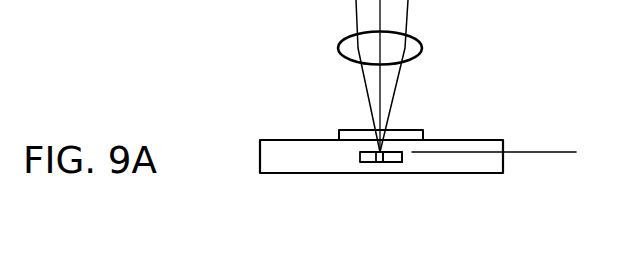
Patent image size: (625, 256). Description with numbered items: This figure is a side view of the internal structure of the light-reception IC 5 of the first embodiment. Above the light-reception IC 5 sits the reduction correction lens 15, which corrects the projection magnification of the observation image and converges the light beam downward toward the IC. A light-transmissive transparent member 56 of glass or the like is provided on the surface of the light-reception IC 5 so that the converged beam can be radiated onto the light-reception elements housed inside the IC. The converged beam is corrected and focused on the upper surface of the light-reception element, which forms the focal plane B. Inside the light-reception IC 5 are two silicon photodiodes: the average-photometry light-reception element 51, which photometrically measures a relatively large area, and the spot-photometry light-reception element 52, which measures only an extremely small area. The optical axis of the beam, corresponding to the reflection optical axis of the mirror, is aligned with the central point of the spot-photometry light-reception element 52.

The light-reception IC 5 is at (303, 140).
The reduction correction lens 15 is at (340, 47).
The average-photometry light-reception element 51 is at (367, 162).
The spot-photometry light-reception element 52 is at (384, 162).
The light-transmissive transparent member 56 is at (423, 131).
The focal plane B is at (538, 152).